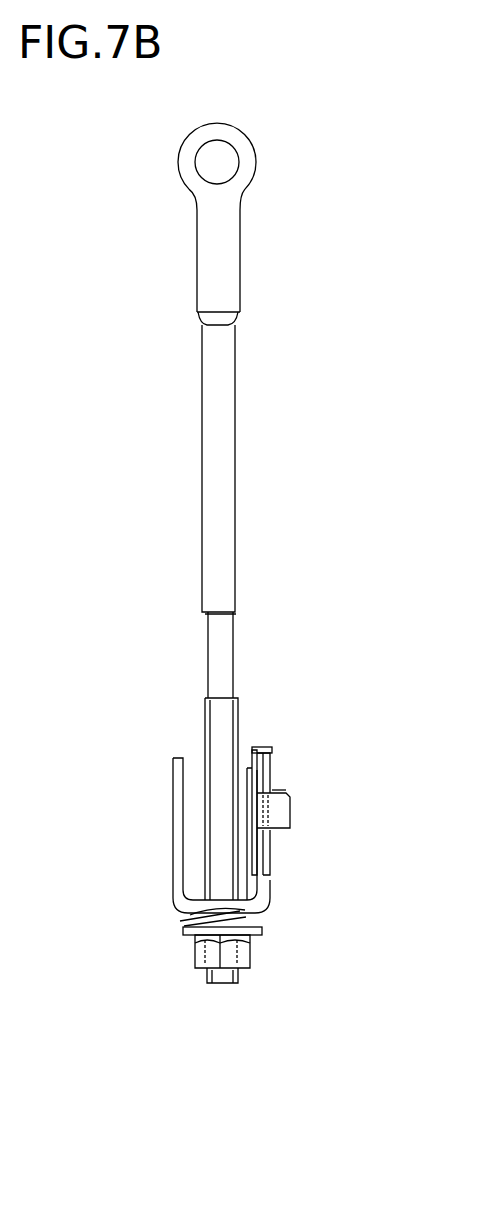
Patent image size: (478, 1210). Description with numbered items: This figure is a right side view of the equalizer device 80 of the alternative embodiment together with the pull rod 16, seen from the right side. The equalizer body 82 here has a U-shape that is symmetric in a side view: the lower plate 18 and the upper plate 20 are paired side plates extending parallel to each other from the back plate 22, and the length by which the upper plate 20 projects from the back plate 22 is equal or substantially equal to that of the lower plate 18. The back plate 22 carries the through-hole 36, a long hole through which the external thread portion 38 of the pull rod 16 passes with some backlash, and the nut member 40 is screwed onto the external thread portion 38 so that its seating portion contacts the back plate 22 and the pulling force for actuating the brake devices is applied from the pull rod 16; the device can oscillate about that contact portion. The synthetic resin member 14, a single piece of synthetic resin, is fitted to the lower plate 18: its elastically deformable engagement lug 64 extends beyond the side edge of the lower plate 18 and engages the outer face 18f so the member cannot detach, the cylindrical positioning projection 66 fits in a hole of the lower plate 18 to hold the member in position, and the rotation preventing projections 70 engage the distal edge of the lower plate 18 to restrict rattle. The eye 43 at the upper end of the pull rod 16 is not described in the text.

The eye ring 43 is at (244, 167).
The pull rod 16 is at (222, 443).
The external thread portion 38 is at (220, 738).
The upper plate 20 is at (178, 826).
The lower plate 18 is at (265, 858).
The outer face 18f is at (267, 770).
The rotation preventing projections 70 is at (260, 747).
The engagement lug 64 is at (281, 817).
The positioning projection 66 is at (277, 788).
The back plate 22 is at (183, 931).
The through-hole 36 is at (238, 942).
The nut member 40 is at (215, 955).
The synthetic resin member 14 is at (272, 736).
The equalizer body 82 is at (152, 768).
The equalizer device 80 is at (313, 928).